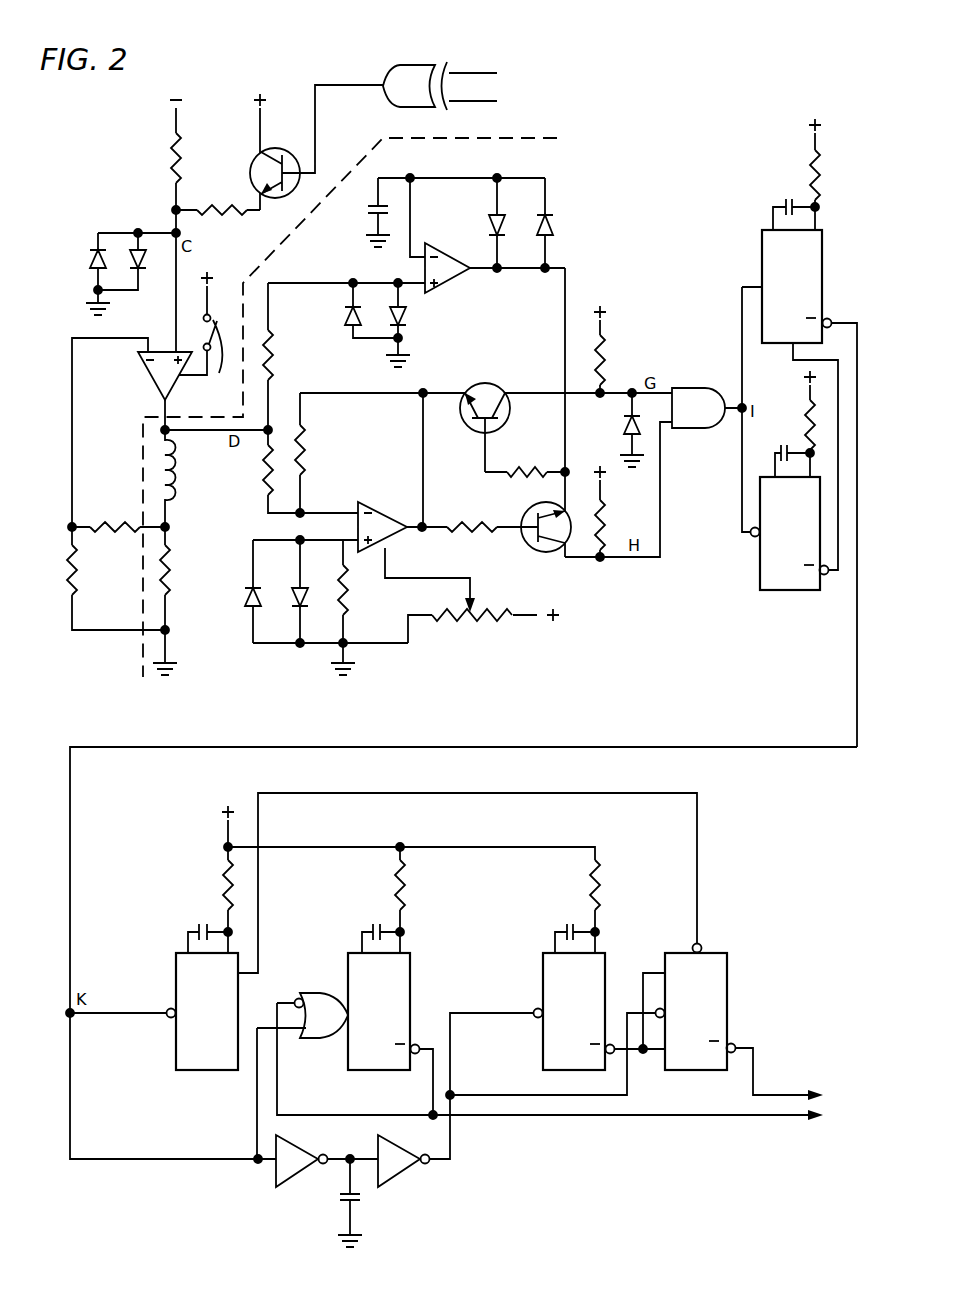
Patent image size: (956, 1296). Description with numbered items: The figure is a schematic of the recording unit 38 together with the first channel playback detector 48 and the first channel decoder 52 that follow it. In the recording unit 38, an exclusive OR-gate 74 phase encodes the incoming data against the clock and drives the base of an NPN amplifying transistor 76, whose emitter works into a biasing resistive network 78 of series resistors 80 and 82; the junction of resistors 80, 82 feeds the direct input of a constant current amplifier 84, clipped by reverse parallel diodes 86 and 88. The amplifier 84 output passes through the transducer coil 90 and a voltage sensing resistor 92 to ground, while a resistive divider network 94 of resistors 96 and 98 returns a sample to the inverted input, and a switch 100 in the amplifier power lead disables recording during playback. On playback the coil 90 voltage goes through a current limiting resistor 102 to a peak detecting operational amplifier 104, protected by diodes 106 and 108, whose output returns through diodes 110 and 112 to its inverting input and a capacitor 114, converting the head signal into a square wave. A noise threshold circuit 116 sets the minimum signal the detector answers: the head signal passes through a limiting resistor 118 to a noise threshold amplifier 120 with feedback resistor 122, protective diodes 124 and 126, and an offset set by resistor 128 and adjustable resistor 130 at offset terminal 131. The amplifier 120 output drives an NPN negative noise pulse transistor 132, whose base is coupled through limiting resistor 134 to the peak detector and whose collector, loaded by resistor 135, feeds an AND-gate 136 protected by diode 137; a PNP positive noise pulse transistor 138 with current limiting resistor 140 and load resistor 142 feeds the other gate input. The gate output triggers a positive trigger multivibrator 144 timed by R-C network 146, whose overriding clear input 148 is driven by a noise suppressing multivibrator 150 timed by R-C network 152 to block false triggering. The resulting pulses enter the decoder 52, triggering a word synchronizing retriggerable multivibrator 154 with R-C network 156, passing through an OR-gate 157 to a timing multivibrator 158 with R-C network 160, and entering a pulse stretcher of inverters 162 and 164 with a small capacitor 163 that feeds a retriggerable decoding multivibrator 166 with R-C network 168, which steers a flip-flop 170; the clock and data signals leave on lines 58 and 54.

The recording unit 38 is at (108, 170).
The phase encoding exclusive OR-gate 74 is at (394, 66).
The NPN amplifying transistor 76 is at (284, 150).
The biasing resistive network 78 is at (198, 168).
The series resistor 80 is at (171, 156).
The series resistor 82 is at (218, 197).
The constant current amplifier 84 is at (146, 380).
The diode 86 is at (89, 262).
The diode 88 is at (142, 266).
The coil 90 is at (171, 469).
The voltage sensing resistor 92 is at (176, 601).
The resistive divider network 94 is at (97, 590).
The resistor 96 is at (68, 590).
The resistor 98 is at (118, 514).
The switch 100 is at (203, 338).
The current limiting resistor 102 is at (287, 356).
The peak detecting operational amplifier 104 is at (441, 247).
The diode 106 is at (345, 316).
The diode 108 is at (406, 316).
The diode 110 is at (508, 222).
The diode 112 is at (553, 228).
The capacitor 114 is at (368, 212).
The noise threshold circuit 116 is at (622, 375).
The limiting resistor 118 is at (262, 470).
The noise threshold amplifier 120 is at (385, 496).
The feedback resistor 122 is at (319, 453).
The diode 124 is at (245, 597).
The diode 126 is at (294, 592).
The resistor 128 is at (347, 594).
The adjustable resistor 130 is at (479, 612).
The offset terminal 131 is at (388, 541).
The NPN negative noise pulse transistor 132 is at (505, 421).
The limiting resistor 134 is at (527, 460).
The load resistor 135 is at (605, 352).
The AND-gate 136 is at (703, 388).
The diode 137 is at (624, 428).
The positive going noise pulse PNP transistor 138 is at (530, 551).
The current limiting resistor 140 is at (485, 514).
The load resistor 142 is at (619, 511).
The positive trigger multivibrator 144 is at (762, 245).
The R-C network 146 is at (808, 200).
The overriding clear input 148 is at (790, 348).
The noise suppressing negative trigger multivibrator 150 is at (760, 563).
The R-C network 152 is at (795, 445).
The word synchronizing retriggerable multivibrator 154 is at (176, 987).
The resistor capacitor network 156 is at (213, 916).
The OR-gate 157 is at (311, 993).
The multivibrator 158 is at (414, 981).
The R-C network 160 is at (390, 918).
The first inverter 162 is at (305, 1145).
The small capacitor 163 is at (344, 1199).
The second inverter 164 is at (404, 1175).
The retriggerable decoding multivibrator 166 is at (610, 977).
The R-C network 168 is at (586, 916).
The flip-flop 170 is at (727, 981).
The first channel playback detector 48 is at (591, 284).
The first channel decoder 52 is at (742, 848).
The line 54 is at (763, 1099).
The line 58 is at (760, 1117).